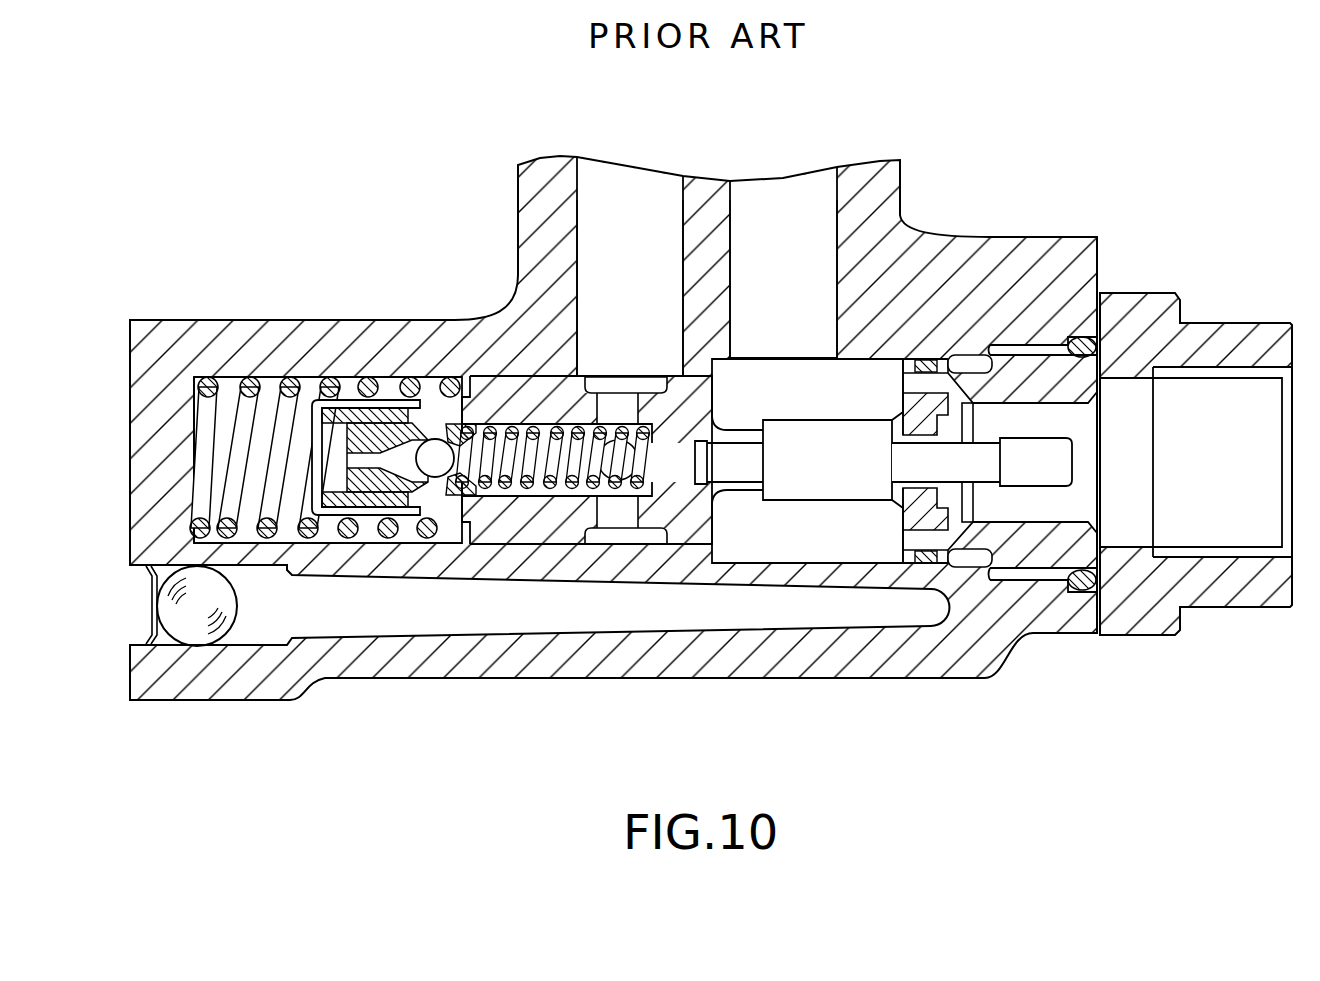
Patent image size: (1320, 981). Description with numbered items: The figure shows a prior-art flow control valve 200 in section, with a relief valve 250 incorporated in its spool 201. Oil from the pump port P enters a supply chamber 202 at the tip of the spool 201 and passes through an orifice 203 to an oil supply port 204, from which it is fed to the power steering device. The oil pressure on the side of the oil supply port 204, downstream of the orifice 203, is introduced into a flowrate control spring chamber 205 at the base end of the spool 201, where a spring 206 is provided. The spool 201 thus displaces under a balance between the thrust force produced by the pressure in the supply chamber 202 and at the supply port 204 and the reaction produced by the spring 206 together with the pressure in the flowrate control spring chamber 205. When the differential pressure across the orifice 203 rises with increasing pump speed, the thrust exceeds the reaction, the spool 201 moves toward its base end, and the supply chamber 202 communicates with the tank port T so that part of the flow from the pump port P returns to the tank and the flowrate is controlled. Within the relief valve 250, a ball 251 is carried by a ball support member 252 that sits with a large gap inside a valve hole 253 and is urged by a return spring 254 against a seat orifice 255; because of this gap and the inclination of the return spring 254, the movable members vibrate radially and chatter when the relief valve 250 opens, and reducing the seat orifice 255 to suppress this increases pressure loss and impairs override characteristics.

The flow control valve 200 is at (918, 690).
The spool 201 is at (672, 377).
The supply chamber 202 is at (867, 380).
The orifice 203 is at (948, 483).
The oil supply port 204 is at (1232, 392).
The flowrate control spring chamber 205 is at (272, 378).
The spring 206 is at (216, 378).
The relief valve 250 is at (432, 402).
The ball 251 is at (437, 470).
The ball support member 252 is at (500, 472).
The valve hole 253 is at (477, 420).
The return spring 254 is at (616, 505).
The seat orifice 255 is at (360, 462).
The tank port T is at (683, 212).
The pump port P is at (837, 207).